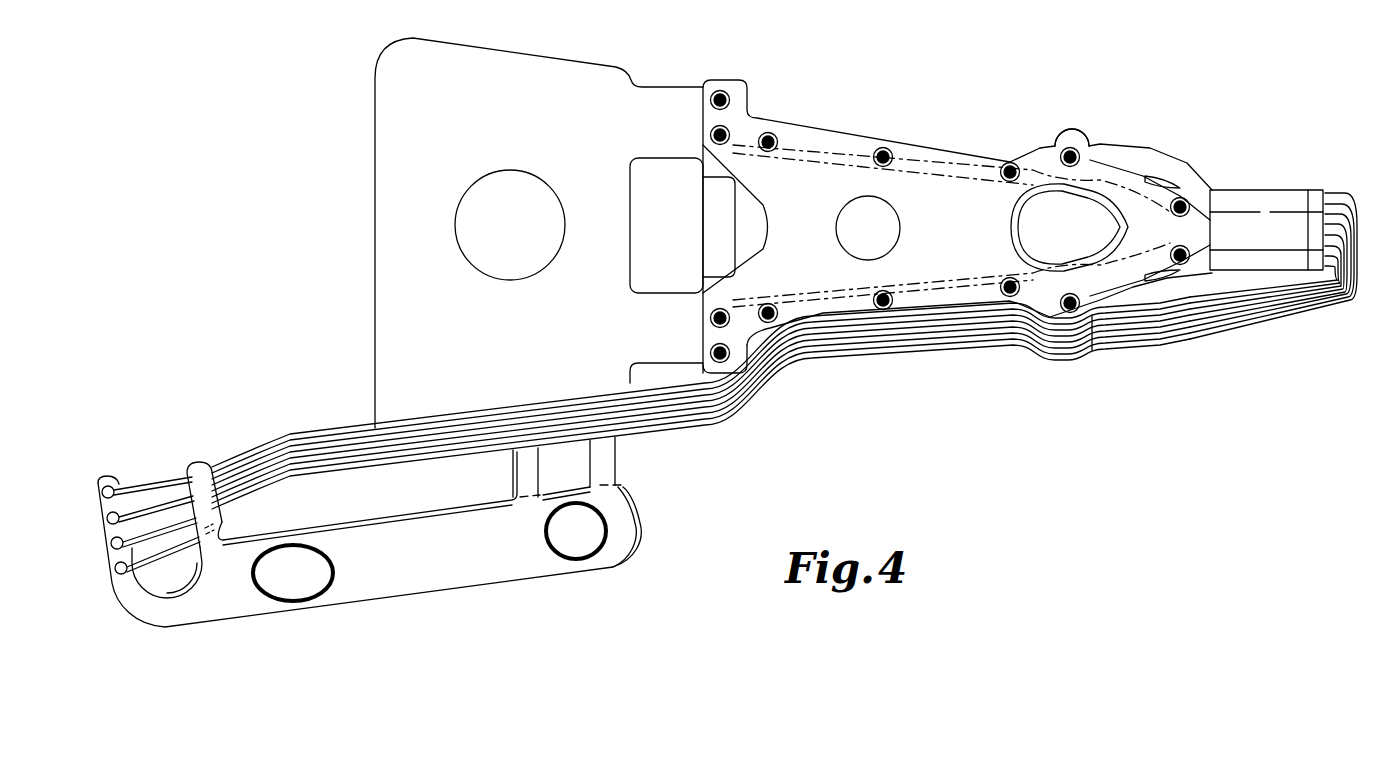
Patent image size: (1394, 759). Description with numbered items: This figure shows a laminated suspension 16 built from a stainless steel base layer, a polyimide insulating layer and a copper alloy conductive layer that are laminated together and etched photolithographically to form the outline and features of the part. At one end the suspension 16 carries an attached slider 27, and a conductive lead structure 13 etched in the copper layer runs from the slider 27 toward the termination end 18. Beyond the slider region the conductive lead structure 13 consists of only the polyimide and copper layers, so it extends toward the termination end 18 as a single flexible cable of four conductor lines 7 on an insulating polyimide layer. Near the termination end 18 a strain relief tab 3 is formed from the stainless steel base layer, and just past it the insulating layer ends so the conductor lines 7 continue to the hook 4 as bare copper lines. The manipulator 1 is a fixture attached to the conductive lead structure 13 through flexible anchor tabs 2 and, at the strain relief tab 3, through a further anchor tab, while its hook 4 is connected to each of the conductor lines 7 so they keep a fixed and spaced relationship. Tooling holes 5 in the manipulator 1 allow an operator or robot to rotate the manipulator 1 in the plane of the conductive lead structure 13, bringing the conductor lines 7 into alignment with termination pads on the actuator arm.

The manipulator 1 is at (448, 560).
The flexible anchor tabs 2 is at (532, 470).
The strain relief tab 3 is at (204, 458).
The hook 4 is at (105, 468).
The tooling holes 5 is at (287, 578).
The conductor lines 7 is at (162, 556).
The conductive lead structure 13 is at (300, 450).
The suspension 16 is at (1064, 95).
The termination end 18 is at (90, 568).
The slider 27 is at (1298, 225).